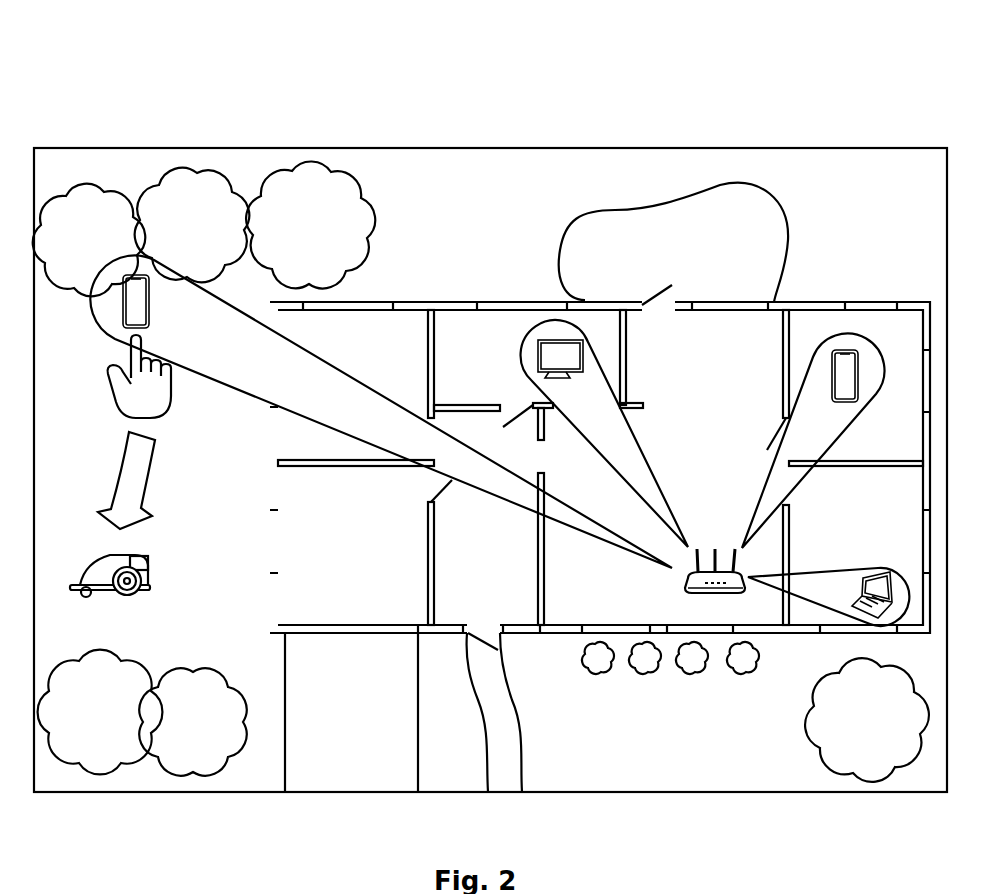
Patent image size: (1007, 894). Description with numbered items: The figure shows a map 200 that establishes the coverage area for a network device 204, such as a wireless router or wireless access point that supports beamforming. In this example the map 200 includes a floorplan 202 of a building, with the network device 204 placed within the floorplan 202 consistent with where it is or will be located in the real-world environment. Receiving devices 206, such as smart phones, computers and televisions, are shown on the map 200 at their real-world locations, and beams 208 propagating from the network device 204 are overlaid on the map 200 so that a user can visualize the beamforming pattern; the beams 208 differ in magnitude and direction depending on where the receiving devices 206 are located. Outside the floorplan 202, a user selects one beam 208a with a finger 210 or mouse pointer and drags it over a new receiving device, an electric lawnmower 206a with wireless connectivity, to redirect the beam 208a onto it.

The map 200 is at (278, 72).
The floorplan 202 is at (723, 419).
The network device 204 is at (721, 575).
The receiving devices 206 is at (145, 303).
The electric lawnmower 206a is at (145, 572).
The beams 208 is at (648, 482).
The beam 208a is at (347, 387).
The finger 210 is at (128, 351).